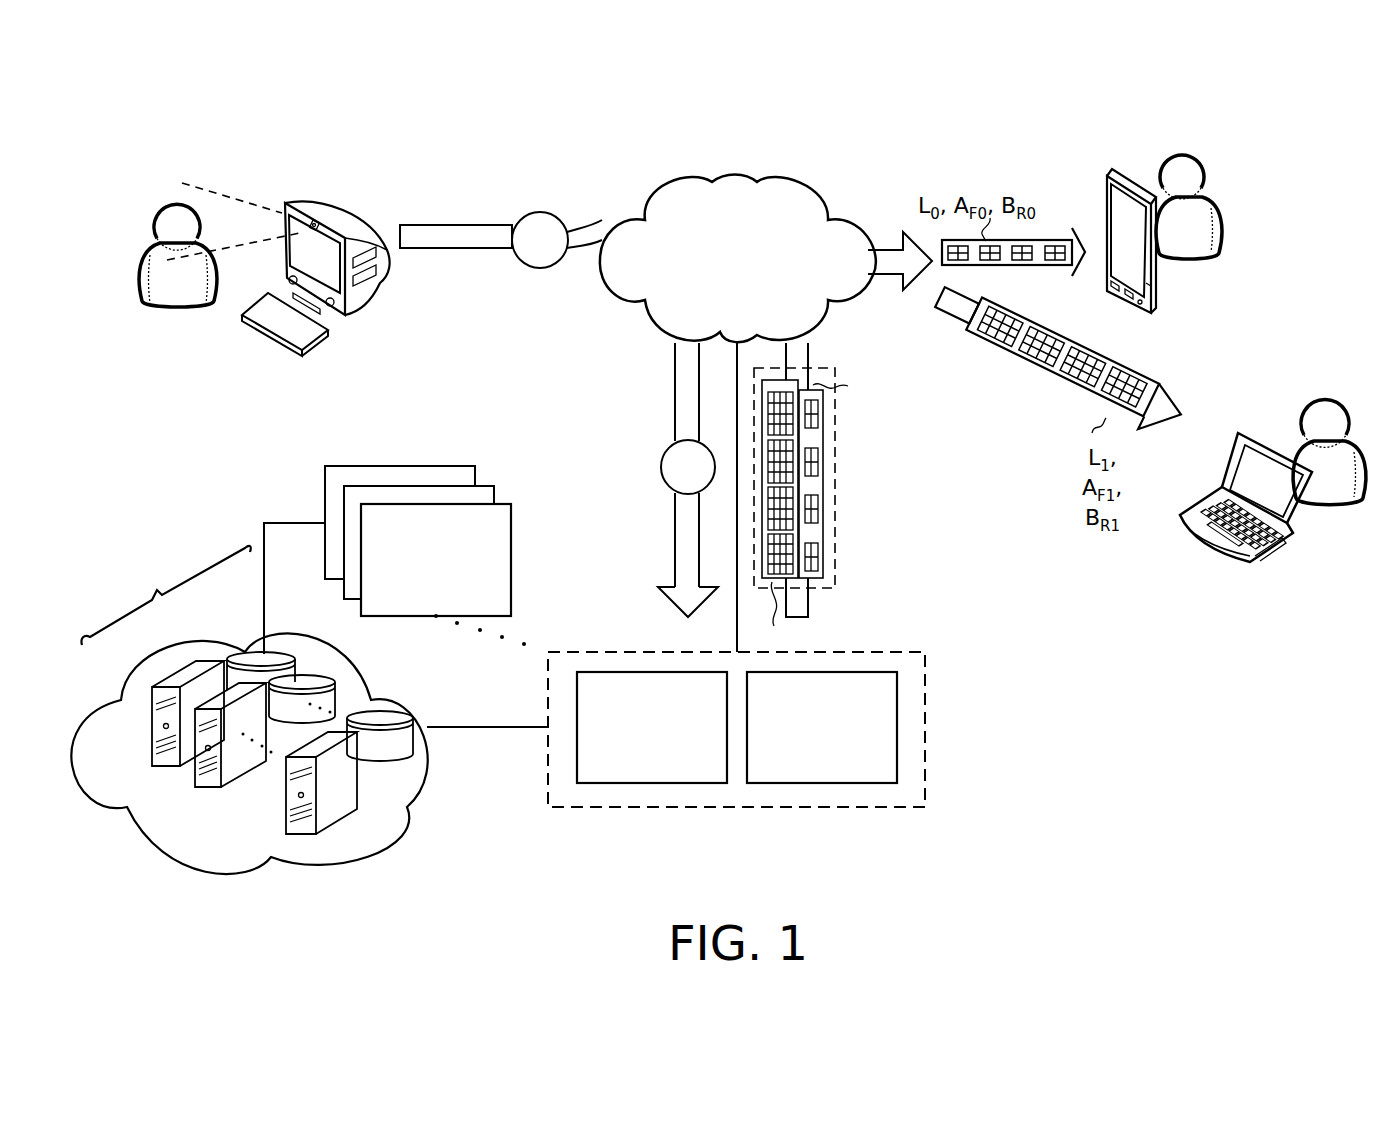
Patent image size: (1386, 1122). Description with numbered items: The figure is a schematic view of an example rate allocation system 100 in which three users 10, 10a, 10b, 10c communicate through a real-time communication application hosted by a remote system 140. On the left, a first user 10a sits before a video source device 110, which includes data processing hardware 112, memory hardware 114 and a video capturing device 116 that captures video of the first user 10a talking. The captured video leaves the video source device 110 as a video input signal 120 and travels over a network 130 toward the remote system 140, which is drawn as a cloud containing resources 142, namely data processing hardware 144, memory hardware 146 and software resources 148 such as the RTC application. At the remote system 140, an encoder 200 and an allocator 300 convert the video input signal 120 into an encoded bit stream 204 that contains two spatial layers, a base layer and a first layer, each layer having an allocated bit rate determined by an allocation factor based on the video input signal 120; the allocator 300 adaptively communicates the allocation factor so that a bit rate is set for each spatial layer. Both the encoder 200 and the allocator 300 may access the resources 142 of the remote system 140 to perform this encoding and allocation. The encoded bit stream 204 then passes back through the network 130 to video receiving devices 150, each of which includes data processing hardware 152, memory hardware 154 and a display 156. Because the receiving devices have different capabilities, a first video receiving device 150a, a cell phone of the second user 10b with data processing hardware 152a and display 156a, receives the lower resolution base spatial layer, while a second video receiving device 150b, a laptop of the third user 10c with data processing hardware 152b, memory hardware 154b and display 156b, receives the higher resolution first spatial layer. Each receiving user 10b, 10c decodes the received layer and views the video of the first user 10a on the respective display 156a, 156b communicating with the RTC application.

The rate allocation system 100 is at (1265, 78).
The user 10 is at (747, 290).
The first user 10a is at (175, 206).
The second user 10b is at (1178, 157).
The third user 10c is at (1323, 404).
The video source device 110 is at (313, 205).
The data processing hardware 112 is at (387, 255).
The memory hardware 114 is at (360, 290).
The video capturing device 116 is at (319, 222).
The video input signal 120 is at (539, 268).
The network 130 is at (789, 188).
The remote system 140 is at (343, 854).
The resources 142 is at (165, 595).
The data processing hardware 144 is at (173, 671).
The memory hardware 146 is at (254, 650).
The software resources 148 is at (325, 573).
The video receiving device 150 is at (1215, 361).
The first video receiving device 150a is at (1106, 175).
The second video receiving device 150b is at (1240, 434).
The data processing hardware 152 is at (1163, 393).
The data processing hardware 152a is at (1114, 286).
The data processing hardware 152b is at (1260, 564).
The memory hardware 154 is at (1299, 579).
The memory hardware 154b is at (1279, 556).
The display 156 is at (1261, 408).
The display 156a is at (1153, 286).
The display 156b is at (1300, 508).
The encoder 200 is at (605, 672).
The encoded bit stream 204 is at (836, 475).
The allocator 300 is at (899, 730).